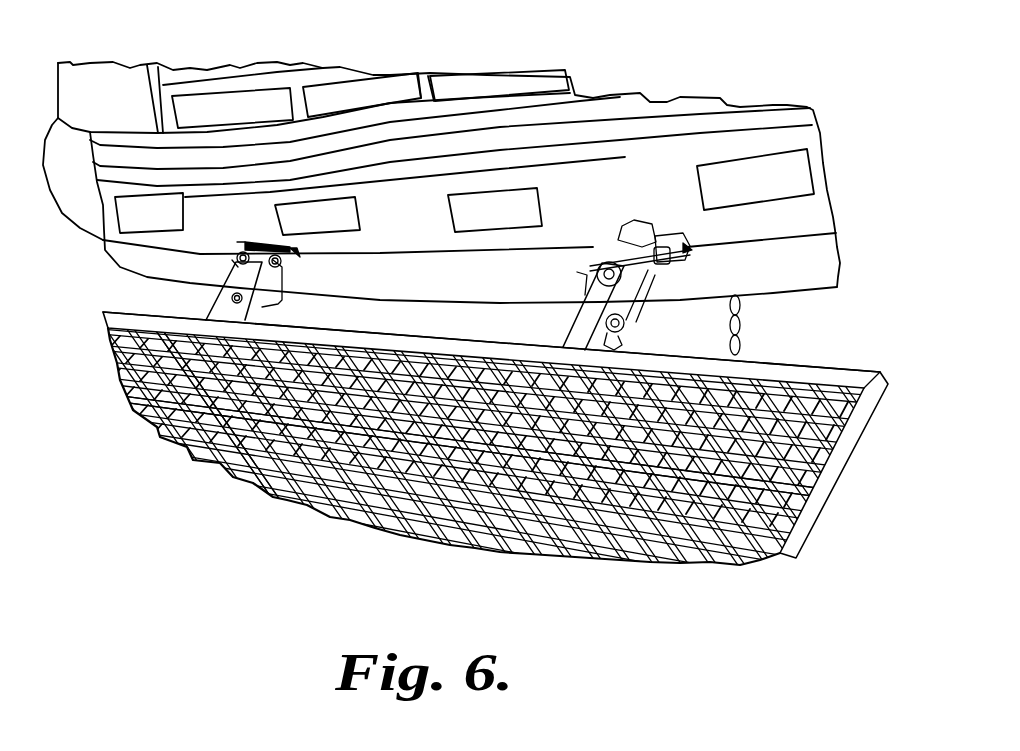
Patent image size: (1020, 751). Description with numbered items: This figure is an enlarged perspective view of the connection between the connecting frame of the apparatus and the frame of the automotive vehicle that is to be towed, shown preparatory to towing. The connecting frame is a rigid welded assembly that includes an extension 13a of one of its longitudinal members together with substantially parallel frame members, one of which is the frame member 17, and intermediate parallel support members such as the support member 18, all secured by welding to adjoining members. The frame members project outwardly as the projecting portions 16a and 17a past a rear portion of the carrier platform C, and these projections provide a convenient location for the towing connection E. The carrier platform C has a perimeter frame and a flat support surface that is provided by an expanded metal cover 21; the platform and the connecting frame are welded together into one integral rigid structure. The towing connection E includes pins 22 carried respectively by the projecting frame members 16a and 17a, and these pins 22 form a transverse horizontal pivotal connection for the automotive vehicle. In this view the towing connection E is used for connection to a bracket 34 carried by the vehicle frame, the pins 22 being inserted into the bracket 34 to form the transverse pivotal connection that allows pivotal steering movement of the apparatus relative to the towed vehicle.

The extension of member 13 13a is at (509, 458).
The projecting portion of frame member 16 16a is at (570, 333).
The frame member 17 is at (137, 410).
The projecting portion of frame member 17 17a is at (201, 322).
The intermediate parallel support member 18 is at (557, 550).
The expanded metal cover 21 is at (137, 320).
The pin 22 is at (680, 258).
The bracket 34 is at (609, 240).
The carrier platform C is at (118, 380).
The towing connection E is at (284, 244).